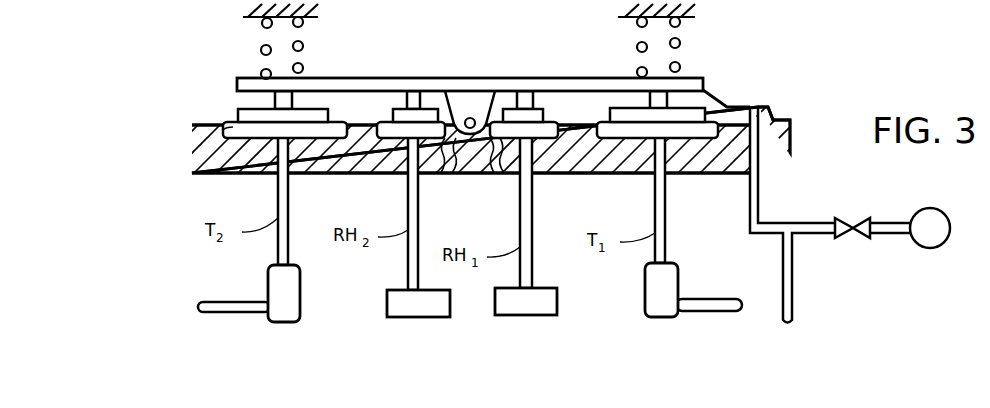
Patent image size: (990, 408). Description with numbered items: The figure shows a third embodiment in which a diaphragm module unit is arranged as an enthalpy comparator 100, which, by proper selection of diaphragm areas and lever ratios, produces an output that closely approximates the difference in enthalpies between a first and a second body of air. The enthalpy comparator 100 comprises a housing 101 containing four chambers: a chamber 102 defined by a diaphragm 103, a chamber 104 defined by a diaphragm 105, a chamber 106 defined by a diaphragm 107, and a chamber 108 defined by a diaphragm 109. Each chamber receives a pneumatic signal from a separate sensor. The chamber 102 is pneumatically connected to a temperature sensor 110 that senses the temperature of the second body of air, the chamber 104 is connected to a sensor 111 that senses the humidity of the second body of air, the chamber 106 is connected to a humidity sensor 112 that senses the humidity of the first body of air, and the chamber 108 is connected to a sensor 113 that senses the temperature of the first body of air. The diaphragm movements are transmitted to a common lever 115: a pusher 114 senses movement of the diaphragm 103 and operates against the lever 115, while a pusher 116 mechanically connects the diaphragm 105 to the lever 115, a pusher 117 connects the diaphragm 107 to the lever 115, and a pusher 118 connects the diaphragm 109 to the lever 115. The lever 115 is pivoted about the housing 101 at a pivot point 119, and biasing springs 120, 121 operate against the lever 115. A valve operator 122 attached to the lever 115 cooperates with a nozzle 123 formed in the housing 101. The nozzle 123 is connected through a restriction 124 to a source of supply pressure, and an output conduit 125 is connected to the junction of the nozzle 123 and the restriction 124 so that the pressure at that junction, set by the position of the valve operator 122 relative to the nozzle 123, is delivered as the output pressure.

The enthalpy comparator 100 is at (150, 101).
The housing 101 is at (192, 157).
The chamber 102 is at (223, 130).
The diaphragm 103 is at (233, 127).
The chamber 104 is at (389, 128).
The diaphragm 105 is at (447, 140).
The chamber 106 is at (503, 130).
The diaphragm 107 is at (541, 140).
The chamber 108 is at (620, 130).
The diaphragm 109 is at (727, 106).
The temperature sensor 110 is at (300, 285).
The sensor 111 is at (402, 317).
The humidity sensor 112 is at (517, 315).
The sensor 113 is at (678, 282).
The pusher 114 is at (317, 109).
The lever 115 is at (368, 78).
The pusher 116 is at (413, 100).
The pusher 117 is at (524, 117).
The pusher 118 is at (637, 113).
The pivot point 119 is at (470, 117).
The biasing spring 120 is at (257, 50).
The biasing spring 121 is at (681, 43).
The valve operator 122 is at (728, 105).
The nozzle 123 is at (771, 110).
The restriction 124 is at (853, 218).
The output conduit 125 is at (794, 275).